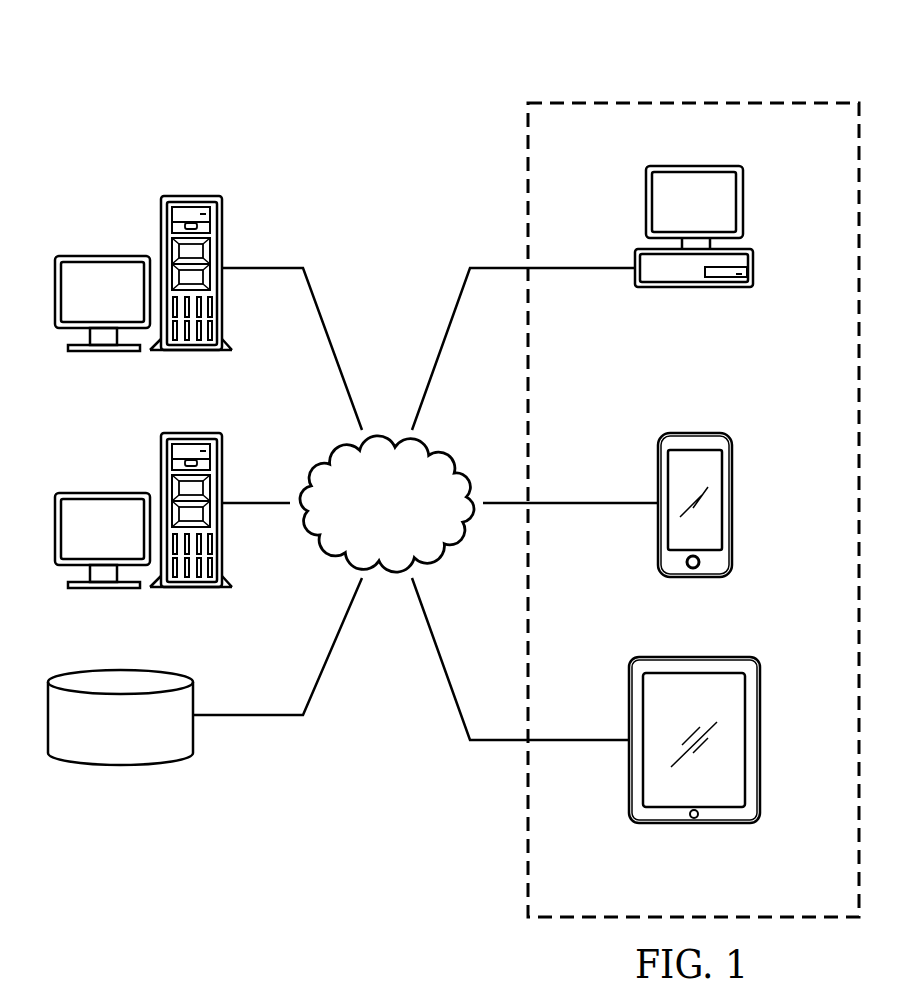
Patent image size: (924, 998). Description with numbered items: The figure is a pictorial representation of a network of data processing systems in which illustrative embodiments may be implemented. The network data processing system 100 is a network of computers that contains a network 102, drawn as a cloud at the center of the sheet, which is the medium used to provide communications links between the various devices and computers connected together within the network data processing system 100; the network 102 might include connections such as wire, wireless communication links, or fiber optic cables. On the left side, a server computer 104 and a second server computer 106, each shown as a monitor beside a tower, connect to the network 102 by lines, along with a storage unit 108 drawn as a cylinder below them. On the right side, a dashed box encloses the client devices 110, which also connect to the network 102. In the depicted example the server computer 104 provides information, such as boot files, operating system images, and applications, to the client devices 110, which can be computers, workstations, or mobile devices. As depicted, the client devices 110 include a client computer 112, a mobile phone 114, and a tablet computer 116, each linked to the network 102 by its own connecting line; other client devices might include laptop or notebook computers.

The network data processing system 100 is at (243, 60).
The network 102 is at (408, 538).
The server computer 104 is at (103, 255).
The server computer 106 is at (149, 525).
The storage unit 108 is at (120, 765).
The client devices 110 is at (741, 93).
The client computer 112 is at (743, 202).
The mobile phone 114 is at (732, 485).
The tablet computer 116 is at (760, 752).